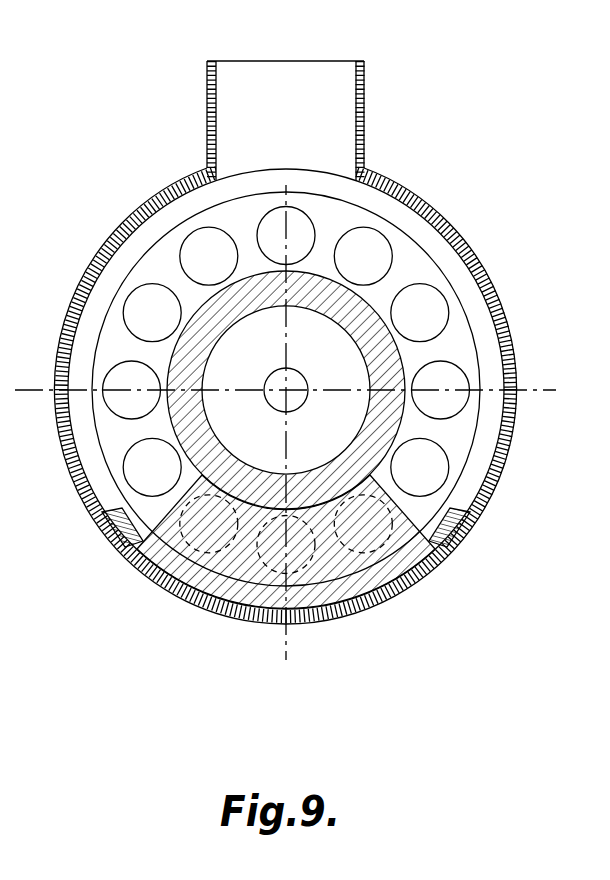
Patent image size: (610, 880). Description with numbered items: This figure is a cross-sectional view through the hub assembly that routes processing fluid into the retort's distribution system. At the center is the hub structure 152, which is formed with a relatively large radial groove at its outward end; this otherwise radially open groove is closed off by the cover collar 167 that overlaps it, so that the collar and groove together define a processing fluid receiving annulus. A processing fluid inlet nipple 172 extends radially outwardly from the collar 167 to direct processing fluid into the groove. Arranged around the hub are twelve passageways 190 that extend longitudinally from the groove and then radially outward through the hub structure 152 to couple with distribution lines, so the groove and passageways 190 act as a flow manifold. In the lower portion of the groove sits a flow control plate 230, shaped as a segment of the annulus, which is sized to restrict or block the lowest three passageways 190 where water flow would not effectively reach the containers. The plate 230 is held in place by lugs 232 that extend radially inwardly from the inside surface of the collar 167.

The hub structure 152 is at (402, 389).
The cover collar 167 is at (489, 276).
The processing fluid inlet nipple 172 is at (364, 108).
The passageways 190 is at (432, 290).
The flow control plate 230 is at (228, 568).
The lugs 232 is at (112, 538).